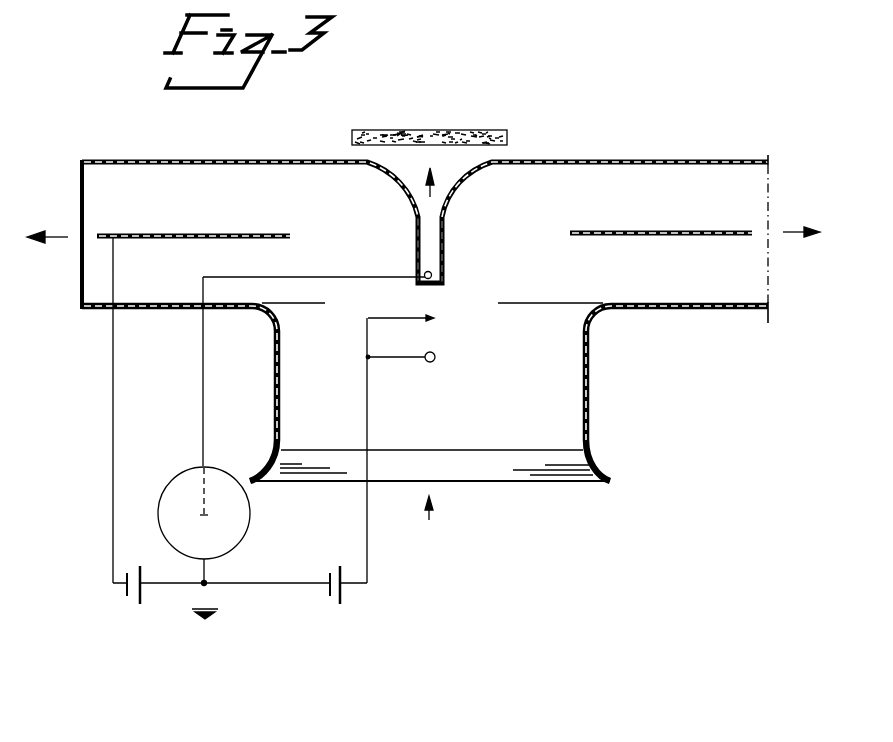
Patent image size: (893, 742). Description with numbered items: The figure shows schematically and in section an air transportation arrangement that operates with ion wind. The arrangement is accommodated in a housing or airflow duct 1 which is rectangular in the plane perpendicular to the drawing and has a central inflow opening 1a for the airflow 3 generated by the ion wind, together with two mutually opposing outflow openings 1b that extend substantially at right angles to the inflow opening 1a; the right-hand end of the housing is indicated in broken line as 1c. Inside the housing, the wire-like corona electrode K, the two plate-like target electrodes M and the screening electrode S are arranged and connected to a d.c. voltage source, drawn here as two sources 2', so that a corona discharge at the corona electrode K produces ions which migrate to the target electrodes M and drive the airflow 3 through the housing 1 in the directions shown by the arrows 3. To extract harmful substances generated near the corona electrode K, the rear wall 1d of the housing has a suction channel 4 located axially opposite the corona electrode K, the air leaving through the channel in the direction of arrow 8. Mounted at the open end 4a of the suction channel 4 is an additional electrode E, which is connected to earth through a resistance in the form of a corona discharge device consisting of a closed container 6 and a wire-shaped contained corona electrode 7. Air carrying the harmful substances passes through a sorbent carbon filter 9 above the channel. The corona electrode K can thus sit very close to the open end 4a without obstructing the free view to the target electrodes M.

The housing or airflow duct 1 is at (590, 346).
The central inflow opening 1a is at (527, 482).
The outflow openings 1b is at (82, 188).
The right open end of chamber 1c is at (770, 277).
The rear wall 1d is at (588, 159).
The voltage sources 2' is at (225, 600).
The airflow 3 is at (54, 243).
The suction channel 4 is at (416, 237).
The open end of suction channel 4a is at (424, 285).
The closed container 6 is at (250, 510).
The contained corona electrode 7 is at (200, 514).
The gas flow arrow 8 is at (425, 189).
The carbon filter 9 is at (427, 130).
The additional electrode E is at (440, 272).
The corona electrode K is at (413, 316).
The target electrodes M is at (187, 233).
The screening electrode S is at (435, 355).